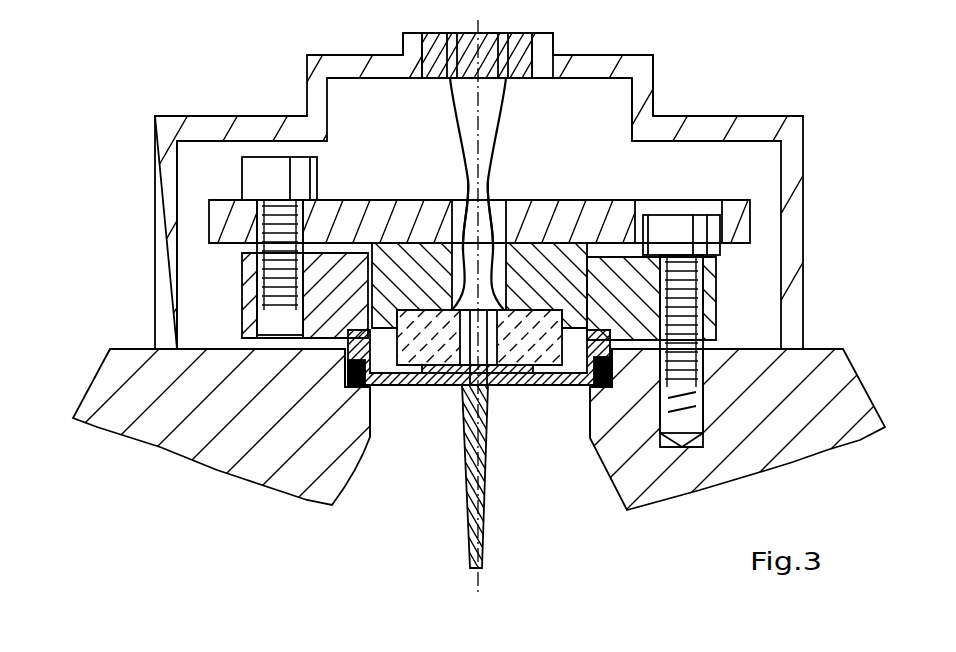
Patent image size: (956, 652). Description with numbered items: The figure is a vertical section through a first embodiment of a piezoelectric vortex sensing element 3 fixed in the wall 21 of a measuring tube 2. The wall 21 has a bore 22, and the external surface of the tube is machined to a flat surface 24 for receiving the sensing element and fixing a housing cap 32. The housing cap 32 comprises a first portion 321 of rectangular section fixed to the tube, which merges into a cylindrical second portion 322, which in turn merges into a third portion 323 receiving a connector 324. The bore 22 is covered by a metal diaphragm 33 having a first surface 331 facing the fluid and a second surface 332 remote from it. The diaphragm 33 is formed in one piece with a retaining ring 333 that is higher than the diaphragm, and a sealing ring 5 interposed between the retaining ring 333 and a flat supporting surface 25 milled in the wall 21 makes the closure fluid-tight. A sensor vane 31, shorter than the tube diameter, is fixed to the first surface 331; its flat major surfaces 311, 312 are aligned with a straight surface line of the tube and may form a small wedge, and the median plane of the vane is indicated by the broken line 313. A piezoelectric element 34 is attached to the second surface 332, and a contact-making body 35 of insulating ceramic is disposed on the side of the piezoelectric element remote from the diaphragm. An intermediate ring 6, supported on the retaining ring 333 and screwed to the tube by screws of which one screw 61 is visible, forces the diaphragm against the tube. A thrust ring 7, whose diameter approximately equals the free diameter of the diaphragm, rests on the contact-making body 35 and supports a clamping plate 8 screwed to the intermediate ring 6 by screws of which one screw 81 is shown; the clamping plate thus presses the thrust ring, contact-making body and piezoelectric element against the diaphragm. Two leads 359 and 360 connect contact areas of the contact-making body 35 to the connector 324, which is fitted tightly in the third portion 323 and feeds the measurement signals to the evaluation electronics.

The measuring tube 2 is at (478, 432).
The piezoelectric vortex sensing element 3 is at (468, 178).
The sealing ring 5 is at (350, 358).
The intermediate ring 6 is at (317, 293).
The thrust ring 7 is at (590, 272).
The clamping plate 8 is at (218, 226).
The wall 21 is at (163, 425).
The bore 22 is at (558, 441).
The flat surface 24 is at (845, 349).
The flat supporting surface 25 is at (356, 388).
The sensor vane 31 is at (584, 411).
The housing cap 32 is at (158, 130).
The diaphragm 33 is at (406, 387).
The piezoelectric element 34 is at (436, 388).
The contact-making body 35 is at (562, 388).
The screw 61 is at (720, 218).
The screw 81 is at (255, 180).
The flat major surface 311 is at (478, 473).
The flat major surface 312 is at (485, 522).
The axis 313 is at (480, 592).
The first portion 321 is at (156, 172).
The cylindrical second portion 322 is at (650, 70).
The third portion 323 is at (405, 48).
The connector 324 is at (526, 40).
The first surface 331 is at (447, 387).
The second surface 332 is at (547, 387).
The retaining ring 333 is at (608, 337).
The lead 359 is at (468, 153).
The lead 360 is at (492, 185).